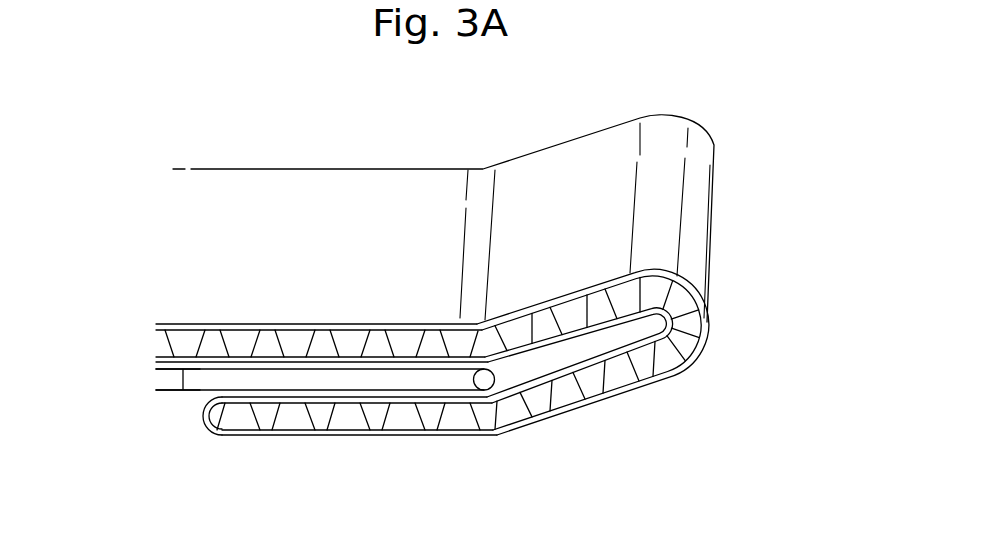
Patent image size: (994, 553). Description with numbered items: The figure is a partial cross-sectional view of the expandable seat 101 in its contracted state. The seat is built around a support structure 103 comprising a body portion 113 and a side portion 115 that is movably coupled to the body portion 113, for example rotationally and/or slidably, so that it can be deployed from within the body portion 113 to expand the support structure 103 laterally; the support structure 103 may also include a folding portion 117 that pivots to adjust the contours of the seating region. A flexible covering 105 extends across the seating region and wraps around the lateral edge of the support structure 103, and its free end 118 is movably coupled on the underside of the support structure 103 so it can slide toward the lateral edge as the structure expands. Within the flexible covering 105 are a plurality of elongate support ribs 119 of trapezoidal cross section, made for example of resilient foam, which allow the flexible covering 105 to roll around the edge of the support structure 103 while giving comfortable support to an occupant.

The expandable seat 101 is at (735, 100).
The support structure 103 is at (640, 337).
The flexible covering 105 is at (547, 180).
The body portion 113 is at (167, 383).
The side portion 115 is at (377, 382).
The folding portion 117 is at (582, 352).
The free end 118 is at (195, 420).
The support ribs 119 is at (237, 423).